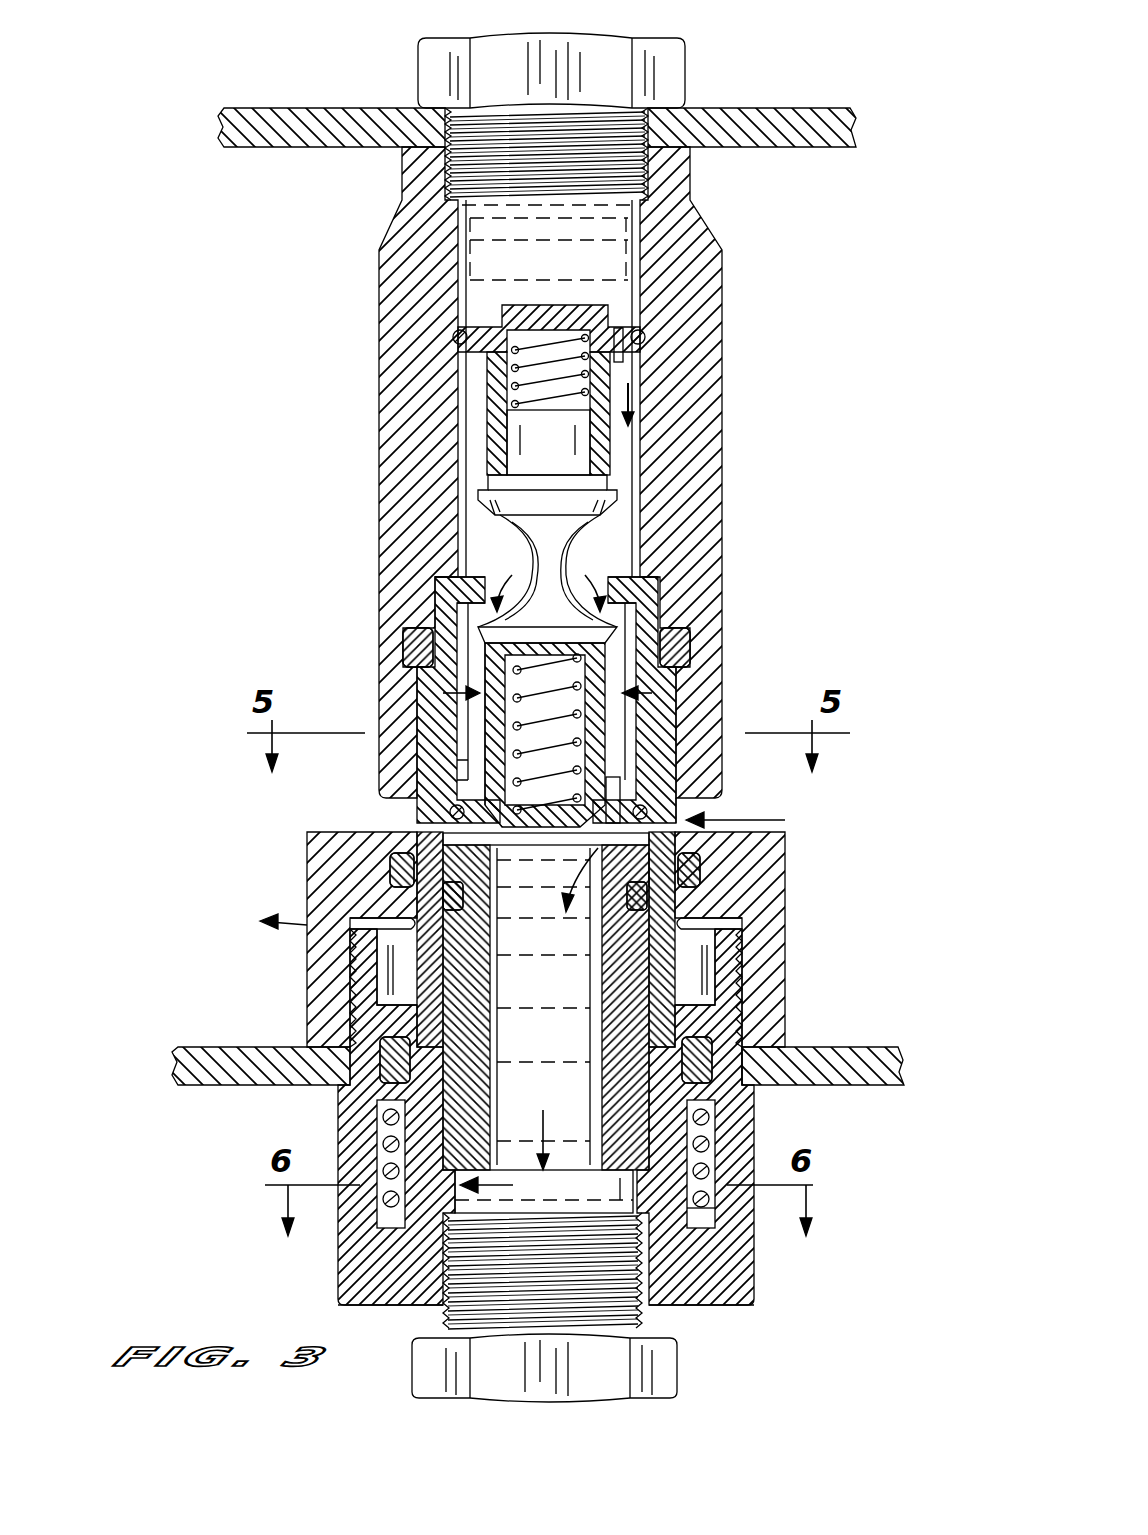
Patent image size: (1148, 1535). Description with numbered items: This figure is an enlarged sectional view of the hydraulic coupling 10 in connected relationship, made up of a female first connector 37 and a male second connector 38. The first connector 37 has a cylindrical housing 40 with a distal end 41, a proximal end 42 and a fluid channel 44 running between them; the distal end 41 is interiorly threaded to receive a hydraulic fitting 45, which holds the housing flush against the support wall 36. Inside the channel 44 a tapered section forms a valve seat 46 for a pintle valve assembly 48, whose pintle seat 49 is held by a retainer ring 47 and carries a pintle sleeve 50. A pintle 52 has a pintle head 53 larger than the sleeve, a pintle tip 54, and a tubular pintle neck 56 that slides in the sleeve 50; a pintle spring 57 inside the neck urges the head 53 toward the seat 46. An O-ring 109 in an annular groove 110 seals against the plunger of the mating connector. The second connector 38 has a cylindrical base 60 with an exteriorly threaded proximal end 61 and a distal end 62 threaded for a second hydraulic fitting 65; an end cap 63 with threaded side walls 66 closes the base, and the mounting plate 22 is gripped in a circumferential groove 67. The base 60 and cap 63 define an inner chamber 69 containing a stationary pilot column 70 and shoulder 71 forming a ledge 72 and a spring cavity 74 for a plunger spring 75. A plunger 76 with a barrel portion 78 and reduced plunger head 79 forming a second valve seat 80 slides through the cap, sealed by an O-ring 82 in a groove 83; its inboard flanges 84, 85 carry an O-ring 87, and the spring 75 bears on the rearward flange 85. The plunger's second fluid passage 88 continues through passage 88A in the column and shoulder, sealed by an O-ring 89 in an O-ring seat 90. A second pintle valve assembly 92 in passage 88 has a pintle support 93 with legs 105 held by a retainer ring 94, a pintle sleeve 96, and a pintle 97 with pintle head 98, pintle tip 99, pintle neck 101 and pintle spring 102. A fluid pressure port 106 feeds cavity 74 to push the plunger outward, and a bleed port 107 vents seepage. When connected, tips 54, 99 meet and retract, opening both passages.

The hydraulic coupling 10 is at (800, 345).
The mounting plate 22 is at (870, 1062).
The support wall 36 is at (800, 118).
The first connector 37 is at (738, 272).
The second connector 38 is at (786, 996).
The housing 40 is at (567, 472).
The distal end 41 is at (672, 195).
The proximal end 42 is at (692, 790).
The fluid channel 44 is at (470, 435).
The hydraulic fitting 45 is at (668, 72).
The valve seat 46 is at (530, 560).
The retainer ring 47 is at (646, 337).
The pintle valve assembly 48 is at (622, 451).
The pintle seat 49 is at (590, 305).
The pintle sleeve 50 is at (490, 470).
The pintle 52 is at (626, 503).
The pintle head 53 is at (612, 520).
The pintle tip 54 is at (604, 545).
The pintle neck 56 is at (510, 397).
The pintle spring 57 is at (510, 357).
The cylindrical base 60 is at (336, 1103).
The proximal end 61 is at (547, 939).
The distal end 62 is at (722, 1306).
The end cap 63 is at (529, 939).
The second hydraulic fitting 65 is at (655, 1366).
The side walls 66 is at (770, 966).
The circumferential groove 67 is at (752, 1070).
The inner chamber 69 is at (388, 985).
The pilot column 70 is at (398, 957).
The shoulder 71 is at (574, 1259).
The ledge 72 is at (718, 1088).
The cavity 74 is at (712, 1130).
The plunger spring 75 is at (706, 1216).
The plunger 76 is at (767, 817).
The barrel portion 78 is at (310, 838).
The plunger head 79 is at (692, 602).
The second valve seat 80 is at (494, 585).
The O-ring 82 is at (702, 872).
The groove 83 is at (445, 896).
The annular flange 84 is at (395, 1050).
The annular flange 85 is at (390, 1120).
The O-ring 87 is at (335, 1068).
The second fluid passage 88 is at (655, 706).
The passage 88A is at (578, 992).
The O-ring 89 is at (655, 900).
The O-ring seat 90 is at (695, 908).
The second pintle valve assembly 92 is at (600, 708).
The pintle support 93 is at (450, 814).
The retainer ring 94 is at (705, 832).
The pintle sleeve 96 is at (620, 782).
The pintle 97 is at (456, 693).
The pintle head 98 is at (564, 684).
The pintle tip 99 is at (620, 612).
The pintle neck 101 is at (498, 766).
The pintle spring 102 is at (500, 738).
The legs 105 is at (490, 797).
The fluid pressure port 106 is at (440, 1182).
The bleed port 107 is at (307, 928).
The O-ring 109 is at (414, 645).
The annular groove 110 is at (680, 646).